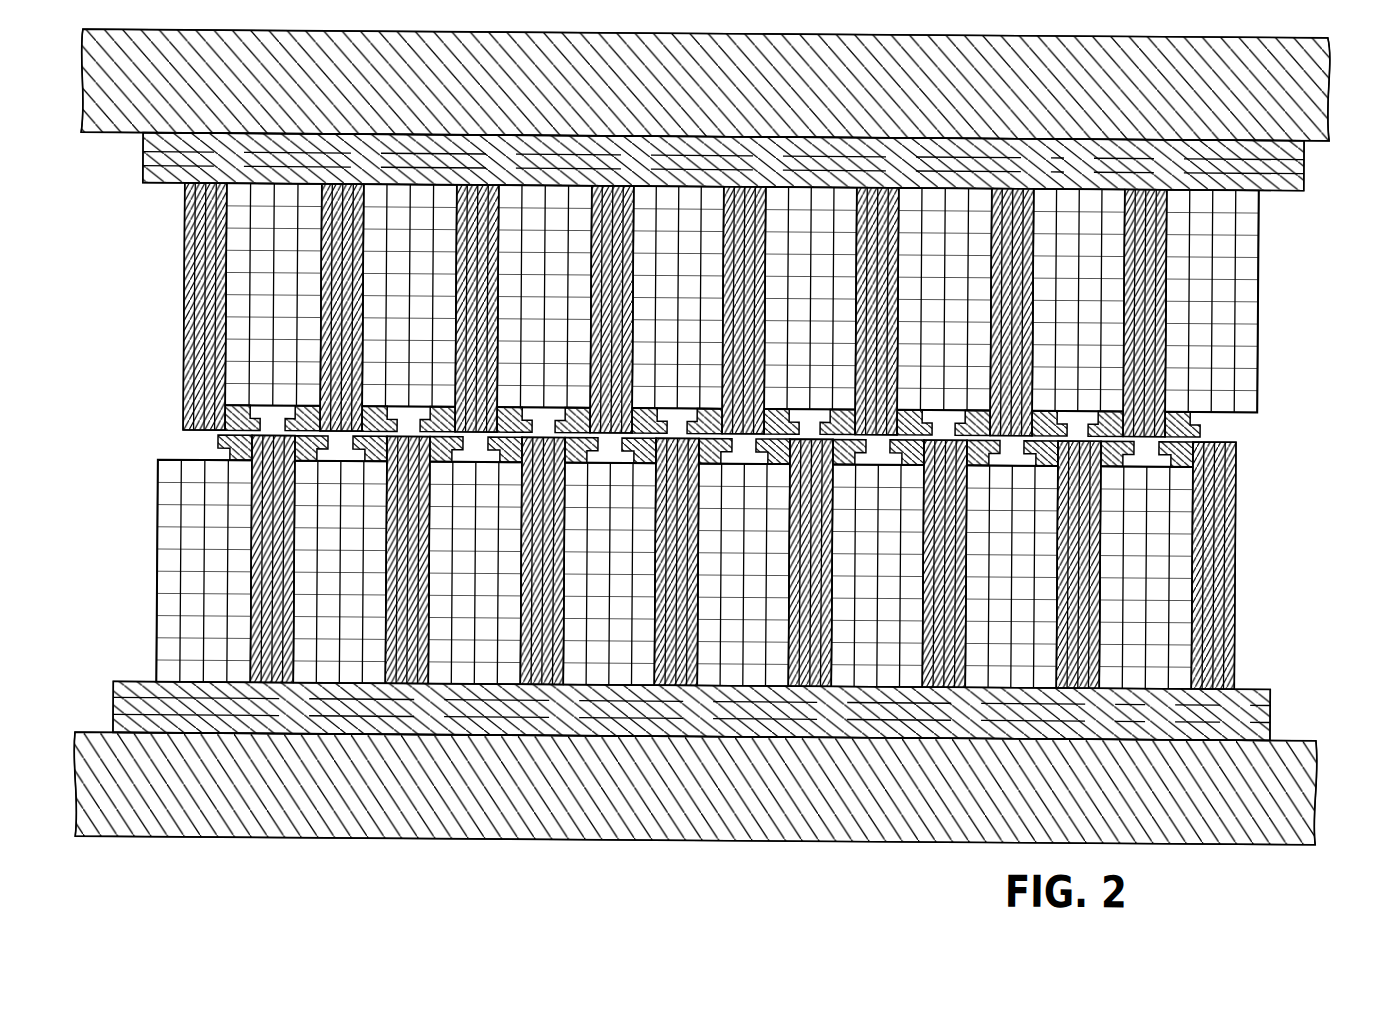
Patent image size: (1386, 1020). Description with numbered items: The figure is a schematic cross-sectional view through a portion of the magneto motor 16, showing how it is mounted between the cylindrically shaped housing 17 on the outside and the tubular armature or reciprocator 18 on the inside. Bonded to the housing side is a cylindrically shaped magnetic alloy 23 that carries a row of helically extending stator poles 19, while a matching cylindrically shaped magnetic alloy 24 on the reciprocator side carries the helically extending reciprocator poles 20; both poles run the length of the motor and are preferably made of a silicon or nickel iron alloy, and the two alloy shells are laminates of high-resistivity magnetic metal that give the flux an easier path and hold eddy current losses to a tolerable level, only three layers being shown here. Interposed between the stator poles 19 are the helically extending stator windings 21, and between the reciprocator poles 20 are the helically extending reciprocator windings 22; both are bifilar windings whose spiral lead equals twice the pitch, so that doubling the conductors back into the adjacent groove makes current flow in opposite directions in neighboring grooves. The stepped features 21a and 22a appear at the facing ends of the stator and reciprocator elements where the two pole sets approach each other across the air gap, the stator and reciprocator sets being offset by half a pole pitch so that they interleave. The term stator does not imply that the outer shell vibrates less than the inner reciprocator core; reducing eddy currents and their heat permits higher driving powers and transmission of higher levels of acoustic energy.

The motor 16 is at (1308, 335).
The cylindrically shaped housing 17 is at (940, 85).
The tubular armature or reciprocator 18 is at (933, 799).
The helically extending stator poles 19 is at (210, 183).
The helically extending reciprocator poles 20 is at (272, 683).
The helically extending stator windings 21 is at (263, 241).
The upper block flanges 21a is at (1202, 421).
The helically extending reciprocator windings 22 is at (195, 651).
The lower block flanges 22a is at (218, 444).
The cylindrically shaped magnetic alloy 23 is at (1067, 170).
The cylindrically shaped magnetic alloy 24 is at (1152, 724).